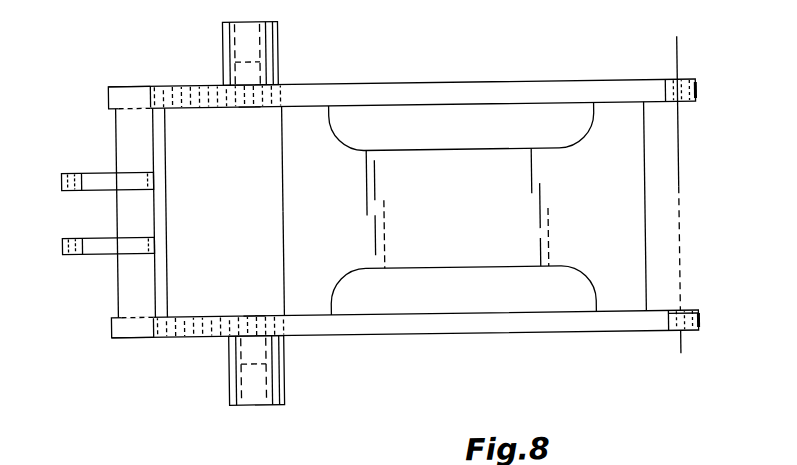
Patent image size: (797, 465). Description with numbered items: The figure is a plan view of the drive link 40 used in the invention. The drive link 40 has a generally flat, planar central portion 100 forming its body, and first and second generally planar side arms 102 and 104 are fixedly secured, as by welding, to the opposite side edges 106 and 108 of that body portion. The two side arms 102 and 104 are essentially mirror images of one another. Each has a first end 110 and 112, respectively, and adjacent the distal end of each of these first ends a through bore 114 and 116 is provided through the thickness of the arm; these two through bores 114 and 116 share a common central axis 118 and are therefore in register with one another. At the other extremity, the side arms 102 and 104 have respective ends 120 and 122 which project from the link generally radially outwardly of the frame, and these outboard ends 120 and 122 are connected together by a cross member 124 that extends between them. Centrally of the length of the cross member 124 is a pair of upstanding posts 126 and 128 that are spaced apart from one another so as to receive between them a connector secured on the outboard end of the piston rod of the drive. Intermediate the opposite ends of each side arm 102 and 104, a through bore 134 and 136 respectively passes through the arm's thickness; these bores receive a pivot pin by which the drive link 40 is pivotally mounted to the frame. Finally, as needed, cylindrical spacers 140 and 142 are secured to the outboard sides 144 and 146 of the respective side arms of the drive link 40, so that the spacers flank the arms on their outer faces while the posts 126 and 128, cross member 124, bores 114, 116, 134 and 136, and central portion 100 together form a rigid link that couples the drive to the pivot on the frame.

The drive link 40 is at (389, 78).
The central portion 100 is at (483, 208).
The first side arm 102 is at (444, 335).
The second side arm 104 is at (499, 84).
The side edge 106 is at (615, 305).
The side edge 108 is at (619, 118).
The first end of first side arm 110 is at (672, 314).
The first end of second side arm 112 is at (664, 84).
The through bore 114 is at (684, 338).
The through bore 116 is at (688, 110).
The common central axis 118 is at (683, 56).
The outboard end of first side arm 120 is at (172, 337).
The outboard end of second side arm 122 is at (193, 82).
The cross member 124 is at (117, 138).
The upstanding post 126 is at (100, 250).
The upstanding post 128 is at (98, 186).
The through bore 134 is at (248, 314).
The through bore 136 is at (247, 106).
The cylindrical spacer 140 is at (227, 380).
The cylindrical spacer 142 is at (225, 52).
The outboard side of first side arm 144 is at (297, 335).
The outboard side of second side arm 146 is at (305, 83).